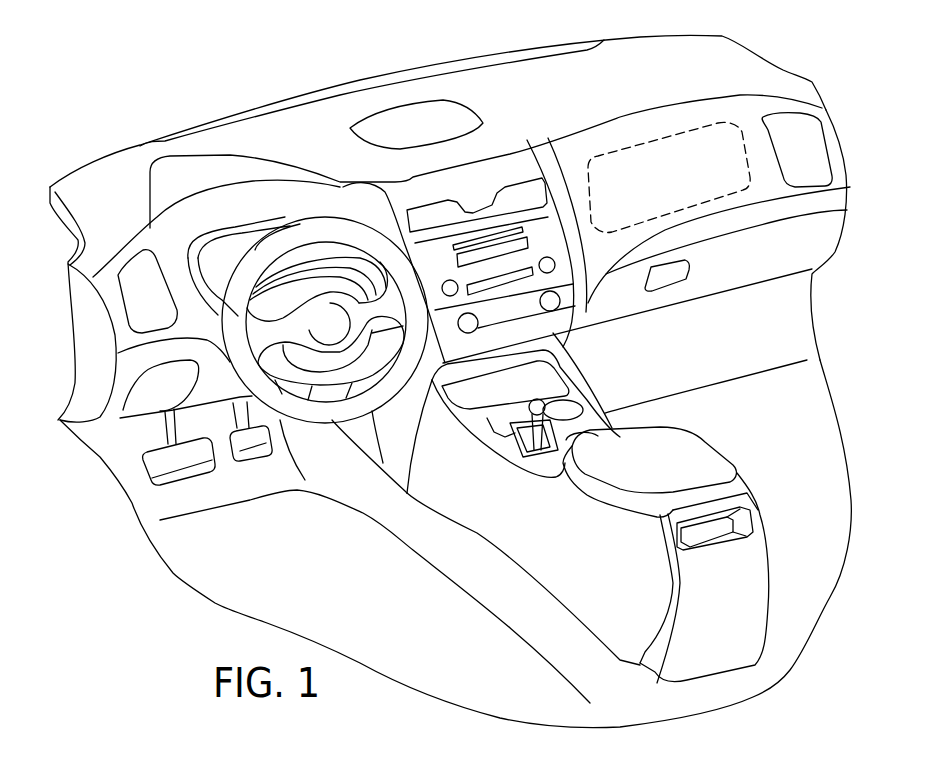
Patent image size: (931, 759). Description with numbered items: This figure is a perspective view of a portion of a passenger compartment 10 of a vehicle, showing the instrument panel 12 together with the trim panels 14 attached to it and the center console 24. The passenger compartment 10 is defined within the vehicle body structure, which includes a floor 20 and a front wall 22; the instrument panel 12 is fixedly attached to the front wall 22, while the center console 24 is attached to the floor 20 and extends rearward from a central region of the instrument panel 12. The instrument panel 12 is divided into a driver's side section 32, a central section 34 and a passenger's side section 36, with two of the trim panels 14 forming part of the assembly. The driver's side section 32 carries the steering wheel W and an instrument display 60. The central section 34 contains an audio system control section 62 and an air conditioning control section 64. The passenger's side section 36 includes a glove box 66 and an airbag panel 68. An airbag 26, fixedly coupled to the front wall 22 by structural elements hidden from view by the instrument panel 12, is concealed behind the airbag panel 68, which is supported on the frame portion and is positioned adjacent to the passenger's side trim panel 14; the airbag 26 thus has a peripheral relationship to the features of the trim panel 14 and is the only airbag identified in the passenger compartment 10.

The passenger compartment 10 is at (177, 98).
The instrument panel 12 is at (536, 87).
The trim panel 14 is at (382, 207).
The floor 20 is at (453, 670).
The front wall 22 is at (123, 438).
The center console 24 is at (590, 553).
The airbag 26 is at (641, 162).
The driver's side section 32 is at (188, 238).
The central section 34 is at (552, 326).
The passenger's side section 36 is at (791, 101).
The instrument display 60 is at (225, 258).
The audio system control section 62 is at (541, 230).
The air conditioning control section 64 is at (497, 318).
The glove box 66 is at (787, 250).
The airbag panel 68 is at (712, 152).
The steering wheel W is at (351, 409).